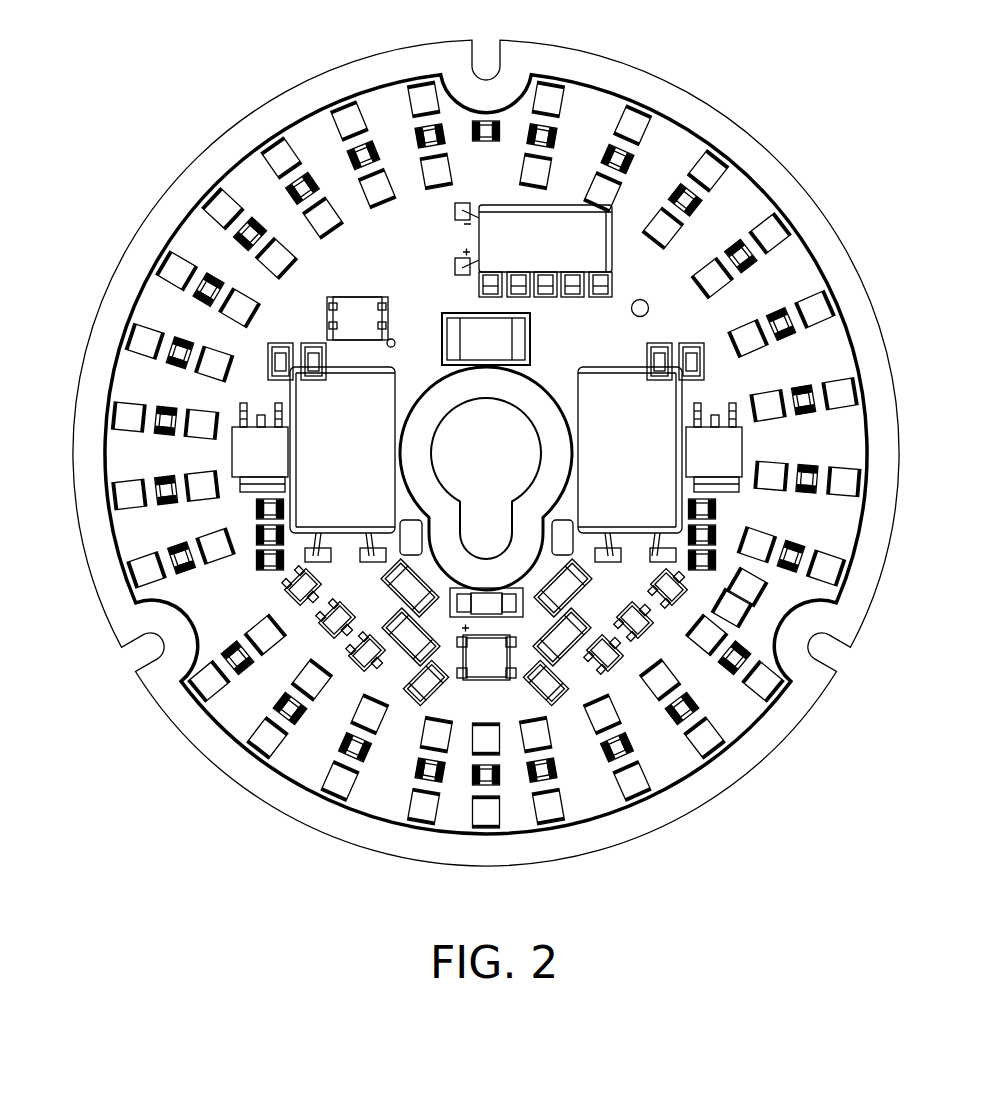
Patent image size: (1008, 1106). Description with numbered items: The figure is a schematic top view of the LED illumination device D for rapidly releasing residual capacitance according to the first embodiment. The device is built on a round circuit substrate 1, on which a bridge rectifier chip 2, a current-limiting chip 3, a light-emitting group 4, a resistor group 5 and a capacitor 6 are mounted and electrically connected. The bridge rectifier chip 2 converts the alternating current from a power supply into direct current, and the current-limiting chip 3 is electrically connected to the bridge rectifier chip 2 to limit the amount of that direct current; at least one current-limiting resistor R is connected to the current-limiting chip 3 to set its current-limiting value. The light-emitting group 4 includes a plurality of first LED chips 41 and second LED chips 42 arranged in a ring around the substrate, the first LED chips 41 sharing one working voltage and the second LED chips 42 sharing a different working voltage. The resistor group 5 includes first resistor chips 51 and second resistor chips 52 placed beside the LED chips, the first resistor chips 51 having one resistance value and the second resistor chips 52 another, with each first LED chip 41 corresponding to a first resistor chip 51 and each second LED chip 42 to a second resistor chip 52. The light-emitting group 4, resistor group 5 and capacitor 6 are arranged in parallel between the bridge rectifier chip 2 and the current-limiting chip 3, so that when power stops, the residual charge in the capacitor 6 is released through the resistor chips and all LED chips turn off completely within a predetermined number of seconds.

The circuit substrate 1 is at (270, 98).
The bridge rectifier chip 2 is at (479, 676).
The current-limiting chip 3 is at (288, 606).
The light-emitting group 4 is at (790, 6).
The first LED chip 41 is at (147, 345).
The second LED chip 42 is at (178, 272).
The resistor group 5 is at (872, 6).
The first resistor chip 51 is at (178, 340).
The second resistor chip 52 is at (208, 283).
The capacitor 6 is at (352, 362).
The current-limiting resistor R is at (255, 572).
The LED illumination device D is at (94, 29).